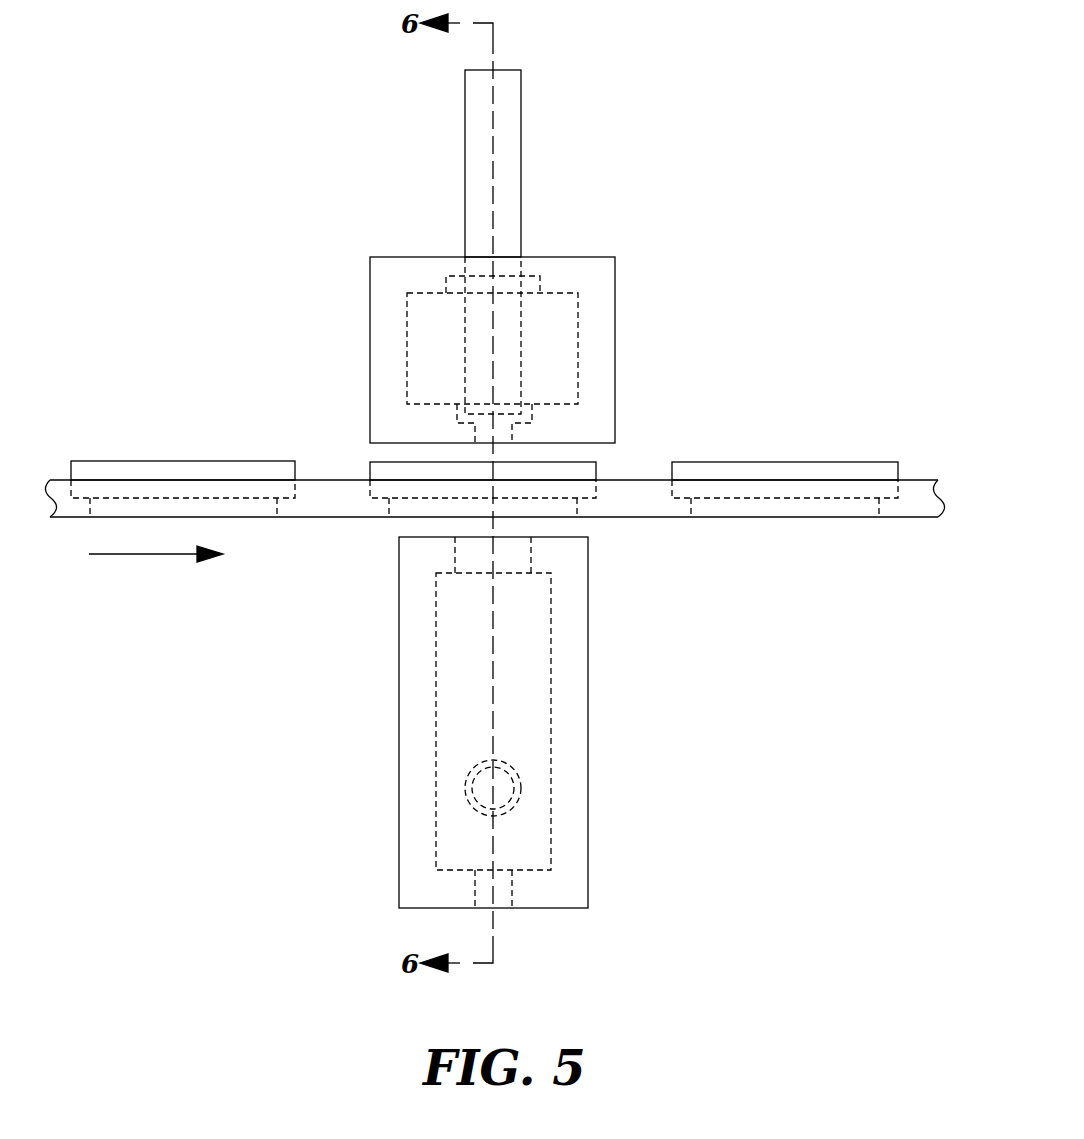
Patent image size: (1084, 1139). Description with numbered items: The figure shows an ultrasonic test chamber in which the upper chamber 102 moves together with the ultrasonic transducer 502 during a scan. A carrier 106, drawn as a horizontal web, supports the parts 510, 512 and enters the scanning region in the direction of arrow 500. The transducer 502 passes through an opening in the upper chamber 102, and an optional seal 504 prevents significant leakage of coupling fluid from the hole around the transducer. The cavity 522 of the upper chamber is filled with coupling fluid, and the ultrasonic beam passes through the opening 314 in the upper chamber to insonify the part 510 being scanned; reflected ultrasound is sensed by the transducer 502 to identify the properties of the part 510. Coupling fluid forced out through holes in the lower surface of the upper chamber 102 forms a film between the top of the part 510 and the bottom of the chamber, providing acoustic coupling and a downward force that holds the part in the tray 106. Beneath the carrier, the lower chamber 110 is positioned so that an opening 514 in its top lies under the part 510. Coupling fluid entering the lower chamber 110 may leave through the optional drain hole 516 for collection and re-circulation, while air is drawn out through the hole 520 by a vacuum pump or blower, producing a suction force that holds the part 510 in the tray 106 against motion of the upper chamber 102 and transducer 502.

The upper chamber 102 is at (368, 318).
The carrier 106 is at (898, 519).
The lower chamber 110 is at (399, 605).
The opening 314 is at (502, 432).
The arrow 500 is at (158, 557).
The ultrasonic transducer 502 is at (465, 141).
The seal 504 is at (540, 287).
The part 510 is at (370, 466).
The parts 512 is at (205, 461).
The opening 514 is at (500, 537).
The drain hole 516 is at (498, 910).
The hole 520 is at (505, 792).
The cavity 522 is at (570, 357).